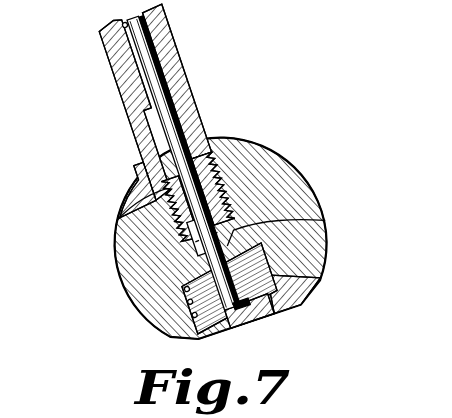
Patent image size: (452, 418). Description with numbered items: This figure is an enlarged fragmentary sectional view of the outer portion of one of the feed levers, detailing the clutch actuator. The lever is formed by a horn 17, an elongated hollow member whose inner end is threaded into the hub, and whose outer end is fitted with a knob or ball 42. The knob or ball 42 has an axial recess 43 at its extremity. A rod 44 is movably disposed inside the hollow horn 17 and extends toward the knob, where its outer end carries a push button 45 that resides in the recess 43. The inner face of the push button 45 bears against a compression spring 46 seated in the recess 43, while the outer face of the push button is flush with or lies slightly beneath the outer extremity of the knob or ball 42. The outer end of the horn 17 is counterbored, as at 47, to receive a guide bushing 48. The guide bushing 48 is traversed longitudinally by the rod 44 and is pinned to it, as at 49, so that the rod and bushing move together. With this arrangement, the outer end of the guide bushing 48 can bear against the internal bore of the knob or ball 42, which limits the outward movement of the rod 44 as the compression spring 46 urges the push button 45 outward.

The horn 17 is at (98, 50).
The knob or ball 42 is at (225, 232).
The axial recess 43 is at (314, 286).
The rod 44 is at (185, 162).
The push button 45 is at (253, 326).
The compression spring 46 is at (211, 302).
The counterbore 47 is at (130, 174).
The guide bushing 48 is at (155, 223).
The pin 49 is at (278, 190).